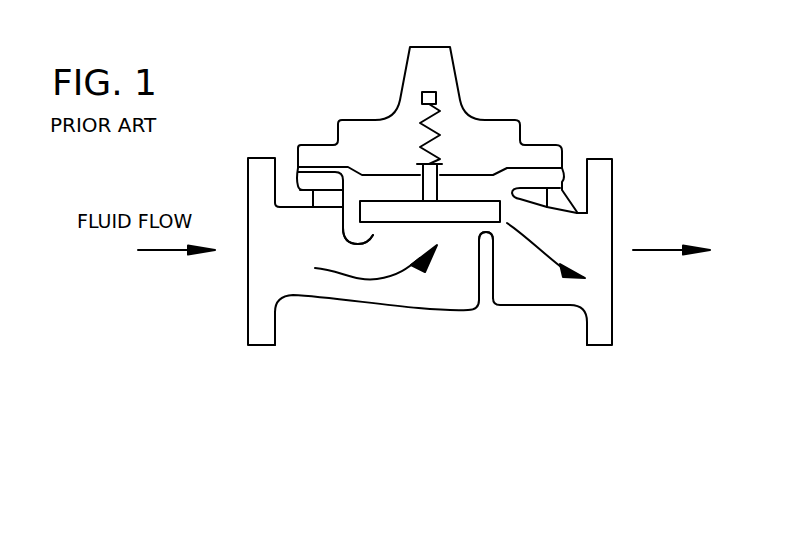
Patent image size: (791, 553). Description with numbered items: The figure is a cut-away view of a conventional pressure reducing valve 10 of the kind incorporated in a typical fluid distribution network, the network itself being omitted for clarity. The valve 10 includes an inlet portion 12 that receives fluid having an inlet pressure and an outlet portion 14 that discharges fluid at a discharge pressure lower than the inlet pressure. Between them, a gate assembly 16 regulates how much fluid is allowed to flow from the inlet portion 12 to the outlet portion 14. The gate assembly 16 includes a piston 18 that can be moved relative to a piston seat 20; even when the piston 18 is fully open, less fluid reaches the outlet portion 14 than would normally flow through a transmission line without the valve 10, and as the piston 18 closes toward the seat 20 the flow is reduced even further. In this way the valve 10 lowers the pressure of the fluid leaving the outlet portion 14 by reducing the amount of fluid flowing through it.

The pressure reducing valve 10 is at (276, 105).
The inlet portion 12 is at (248, 288).
The outlet portion 14 is at (613, 295).
The gate assembly 16 is at (560, 113).
The piston 18 is at (458, 222).
The piston seat 20 is at (373, 235).